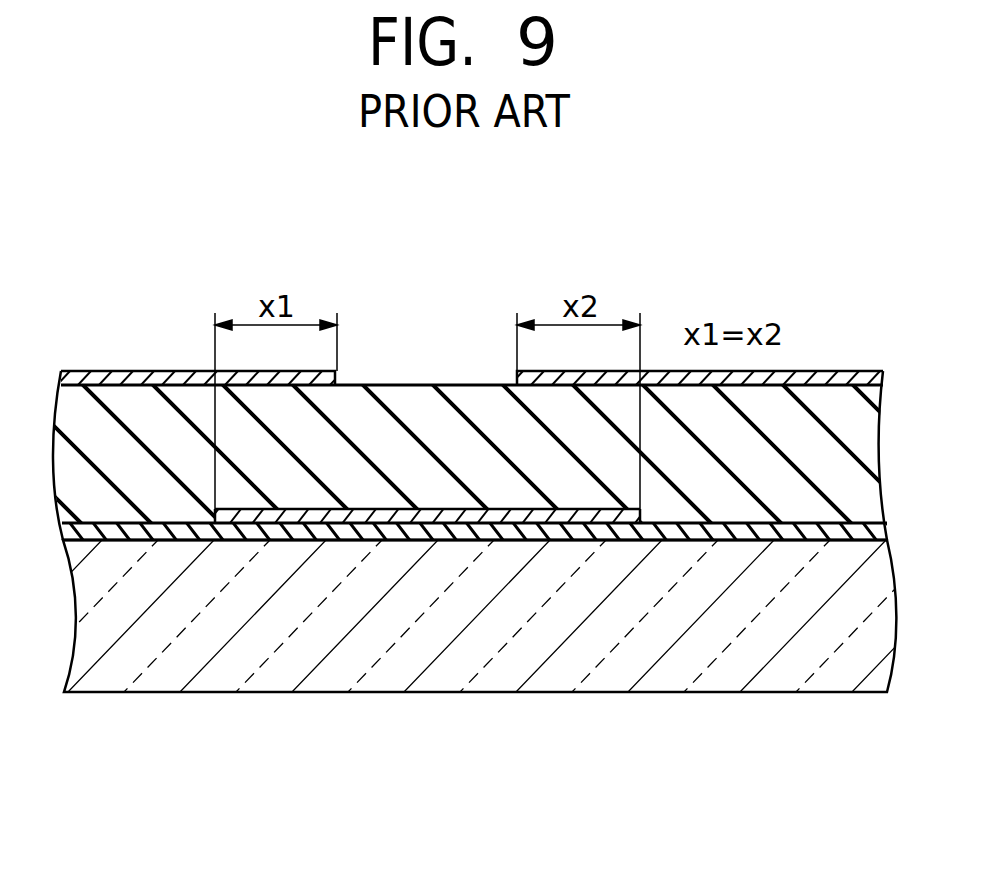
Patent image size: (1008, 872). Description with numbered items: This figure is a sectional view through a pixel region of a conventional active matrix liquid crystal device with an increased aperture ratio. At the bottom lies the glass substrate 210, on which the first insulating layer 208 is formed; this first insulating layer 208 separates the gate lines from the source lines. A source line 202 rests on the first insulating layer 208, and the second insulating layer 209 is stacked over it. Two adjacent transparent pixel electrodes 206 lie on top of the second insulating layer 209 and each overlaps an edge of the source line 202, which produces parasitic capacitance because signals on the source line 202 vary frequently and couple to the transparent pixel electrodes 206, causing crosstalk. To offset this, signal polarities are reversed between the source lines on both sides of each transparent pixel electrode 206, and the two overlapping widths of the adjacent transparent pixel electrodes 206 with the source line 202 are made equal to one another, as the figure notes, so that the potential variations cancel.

The source line 202 is at (466, 517).
The transparent pixel electrode 206 is at (130, 371).
The first insulating layer 208 is at (742, 535).
The second insulating layer 209 is at (383, 428).
The glass substrate 210 is at (330, 628).